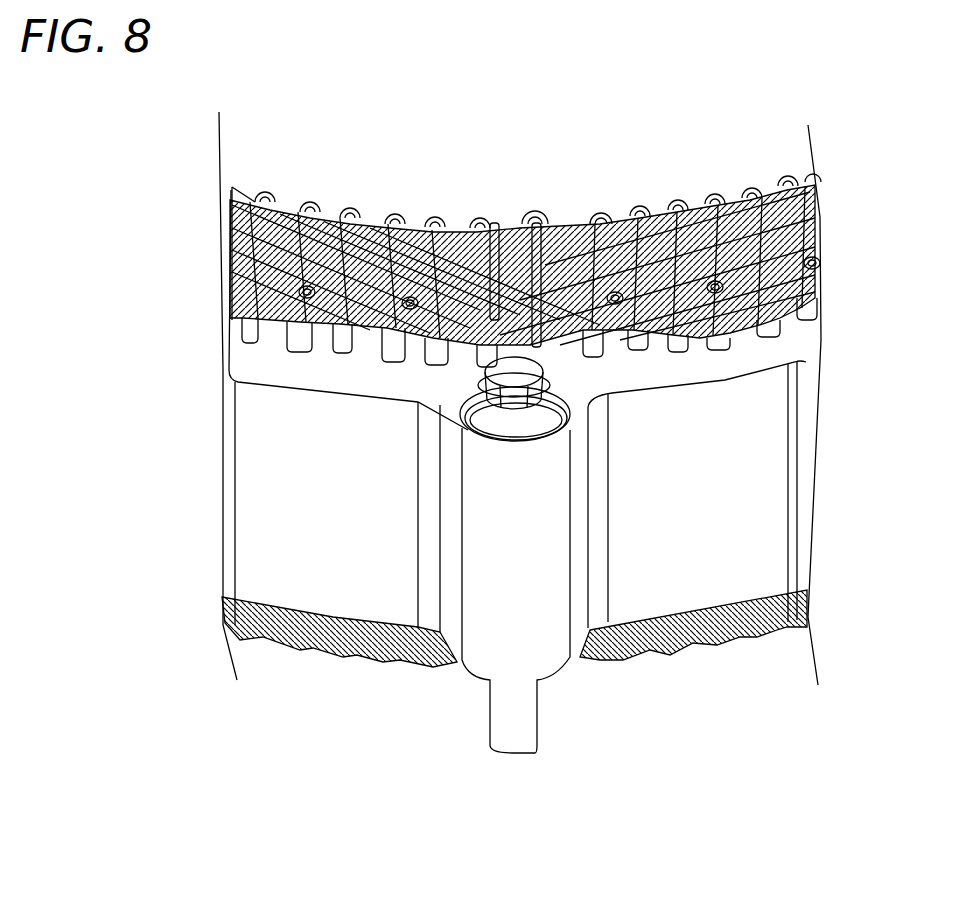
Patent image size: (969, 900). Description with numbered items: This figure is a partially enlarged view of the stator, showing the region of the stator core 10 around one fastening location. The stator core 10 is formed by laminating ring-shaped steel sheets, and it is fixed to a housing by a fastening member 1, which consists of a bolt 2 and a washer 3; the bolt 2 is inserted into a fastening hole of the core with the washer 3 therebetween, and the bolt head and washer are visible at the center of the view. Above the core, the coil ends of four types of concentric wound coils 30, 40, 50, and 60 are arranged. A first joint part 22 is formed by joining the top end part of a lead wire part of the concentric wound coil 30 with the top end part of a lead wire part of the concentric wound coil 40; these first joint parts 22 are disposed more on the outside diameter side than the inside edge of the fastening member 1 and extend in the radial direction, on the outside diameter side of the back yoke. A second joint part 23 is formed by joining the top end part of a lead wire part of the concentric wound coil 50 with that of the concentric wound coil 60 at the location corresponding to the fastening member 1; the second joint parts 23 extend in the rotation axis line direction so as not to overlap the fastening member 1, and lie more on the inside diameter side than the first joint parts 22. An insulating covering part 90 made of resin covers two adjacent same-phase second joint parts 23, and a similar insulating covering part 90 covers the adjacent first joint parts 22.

The fastening member 1 is at (578, 427).
The bolt 2 is at (520, 408).
The washer 3 is at (495, 438).
The stator core 10 is at (667, 596).
The first joint part 22 is at (597, 337).
The second joint part 23 is at (483, 203).
The concentric wound coil 30 is at (387, 213).
The concentric wound coil 40 is at (433, 213).
The concentric wound coil 50 is at (558, 223).
The concentric wound coil 60 is at (453, 227).
The insulating covering part 90 is at (515, 213).